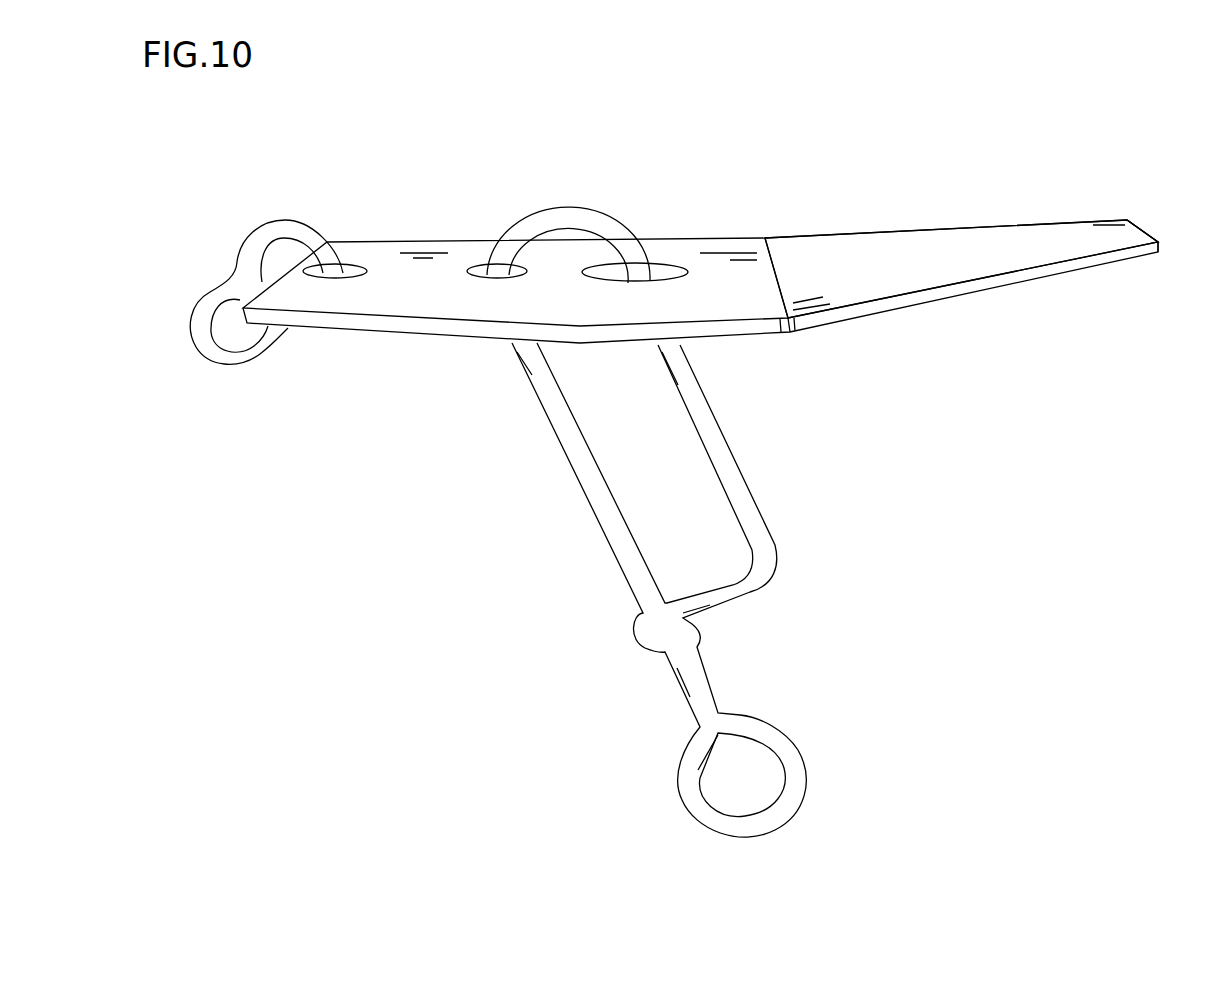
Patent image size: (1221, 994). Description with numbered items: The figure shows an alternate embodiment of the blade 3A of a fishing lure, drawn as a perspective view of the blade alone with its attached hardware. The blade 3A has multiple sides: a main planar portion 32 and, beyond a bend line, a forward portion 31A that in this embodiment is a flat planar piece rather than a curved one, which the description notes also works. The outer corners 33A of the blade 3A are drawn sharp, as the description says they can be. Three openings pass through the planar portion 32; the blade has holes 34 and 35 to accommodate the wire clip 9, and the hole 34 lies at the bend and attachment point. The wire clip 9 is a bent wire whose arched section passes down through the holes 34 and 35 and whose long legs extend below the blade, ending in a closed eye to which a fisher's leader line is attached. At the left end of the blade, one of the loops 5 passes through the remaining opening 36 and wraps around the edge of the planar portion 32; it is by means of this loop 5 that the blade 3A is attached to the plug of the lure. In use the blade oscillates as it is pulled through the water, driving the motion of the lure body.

The loop 5 is at (327, 242).
The wire clip 9 is at (763, 570).
The planar portion 32 is at (433, 295).
The blade 3A is at (782, 252).
The portion 31A is at (890, 242).
The corners 33A is at (1122, 215).
The hole 34 is at (648, 263).
The hole 35 is at (473, 268).
The hole 36 is at (372, 268).